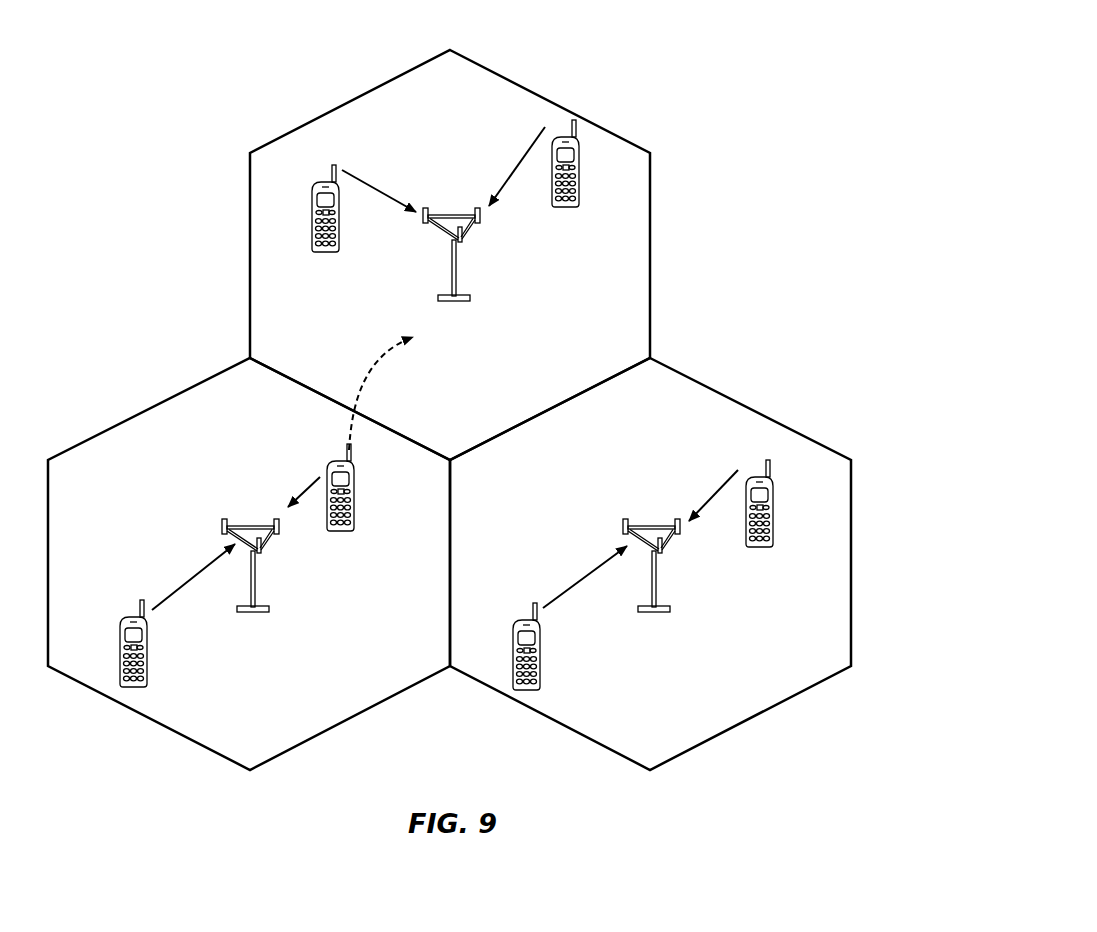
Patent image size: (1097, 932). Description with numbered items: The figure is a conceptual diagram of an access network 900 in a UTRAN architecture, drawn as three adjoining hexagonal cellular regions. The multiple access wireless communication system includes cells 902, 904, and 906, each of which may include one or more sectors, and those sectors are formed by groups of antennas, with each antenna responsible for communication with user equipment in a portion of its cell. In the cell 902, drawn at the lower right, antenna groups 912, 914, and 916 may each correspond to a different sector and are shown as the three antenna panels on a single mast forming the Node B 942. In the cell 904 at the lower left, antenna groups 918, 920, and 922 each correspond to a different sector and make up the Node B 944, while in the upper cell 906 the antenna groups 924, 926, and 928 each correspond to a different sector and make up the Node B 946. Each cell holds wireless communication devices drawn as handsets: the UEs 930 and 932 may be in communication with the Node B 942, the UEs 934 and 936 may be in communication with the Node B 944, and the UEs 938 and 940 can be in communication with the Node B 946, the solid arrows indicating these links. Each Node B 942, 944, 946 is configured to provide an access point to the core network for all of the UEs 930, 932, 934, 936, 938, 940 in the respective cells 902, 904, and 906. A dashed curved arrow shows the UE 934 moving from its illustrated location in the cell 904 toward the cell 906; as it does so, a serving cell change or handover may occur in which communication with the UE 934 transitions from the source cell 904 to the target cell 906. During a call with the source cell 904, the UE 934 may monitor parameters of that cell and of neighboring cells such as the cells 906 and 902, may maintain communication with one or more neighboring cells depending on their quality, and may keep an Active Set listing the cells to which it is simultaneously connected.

The access network 900 is at (449, 395).
The cell 902 is at (752, 407).
The cell 904 is at (126, 419).
The cell 906 is at (537, 88).
The antenna group 912 is at (623, 520).
The antenna group 914 is at (663, 553).
The antenna group 916 is at (682, 531).
The antenna group 918 is at (262, 553).
The antenna group 920 is at (280, 531).
The antenna group 922 is at (222, 524).
The antenna group 924 is at (420, 225).
The antenna group 926 is at (463, 243).
The antenna group 928 is at (482, 223).
The UE 930 is at (774, 495).
The UE 932 is at (513, 637).
The UE 934 is at (355, 477).
The UE 936 is at (121, 639).
The UE 938 is at (324, 253).
The UE 940 is at (568, 208).
The Node B 942 is at (651, 545).
The Node B 944 is at (251, 545).
The Node B 946 is at (450, 234).